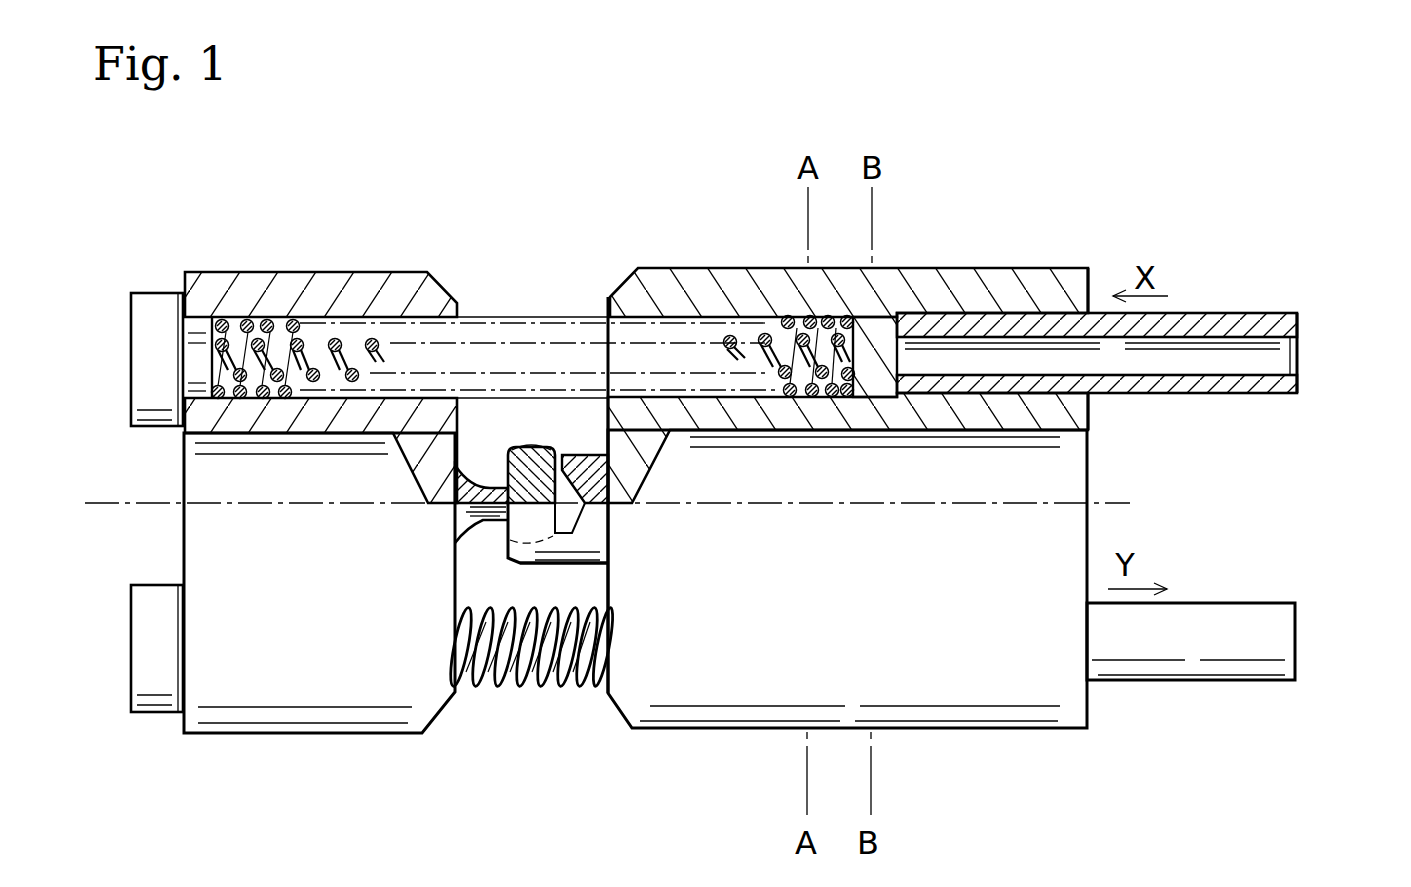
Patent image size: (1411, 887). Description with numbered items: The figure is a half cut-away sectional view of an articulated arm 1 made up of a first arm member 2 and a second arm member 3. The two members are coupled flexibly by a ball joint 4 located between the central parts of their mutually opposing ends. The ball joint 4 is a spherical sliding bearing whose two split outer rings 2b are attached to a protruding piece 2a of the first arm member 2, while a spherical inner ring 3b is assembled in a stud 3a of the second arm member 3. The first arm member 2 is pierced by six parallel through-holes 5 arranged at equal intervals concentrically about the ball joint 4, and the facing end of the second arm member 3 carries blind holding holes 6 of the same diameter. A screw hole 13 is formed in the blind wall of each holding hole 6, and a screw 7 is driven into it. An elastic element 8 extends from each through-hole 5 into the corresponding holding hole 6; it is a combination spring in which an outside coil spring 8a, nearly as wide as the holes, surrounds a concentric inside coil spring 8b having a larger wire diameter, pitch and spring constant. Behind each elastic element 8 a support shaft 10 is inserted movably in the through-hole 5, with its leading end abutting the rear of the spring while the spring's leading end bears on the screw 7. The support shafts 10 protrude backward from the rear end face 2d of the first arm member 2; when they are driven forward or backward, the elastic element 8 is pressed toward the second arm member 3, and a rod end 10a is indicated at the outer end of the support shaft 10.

The articulated arm 1 is at (1073, 258).
The first arm member 2 is at (1028, 266).
The protruding piece 2a is at (580, 566).
The split outer ring 2b is at (527, 442).
The rear end face 2d is at (1092, 282).
The second arm member 3 is at (232, 266).
The stud 3a is at (482, 520).
The spherical inner ring 3b is at (560, 521).
The ball joint 4 is at (541, 441).
The through-hole 5 is at (990, 268).
The holding hole 6 is at (383, 330).
The screw 7 is at (149, 292).
The elastic element 8 is at (618, 156).
The outside coil spring 8a is at (745, 268).
The inside coil spring 8b is at (707, 268).
The support shaft 10 is at (1244, 313).
The rod end 10a is at (1297, 356).
The screw hole 13 is at (205, 385).